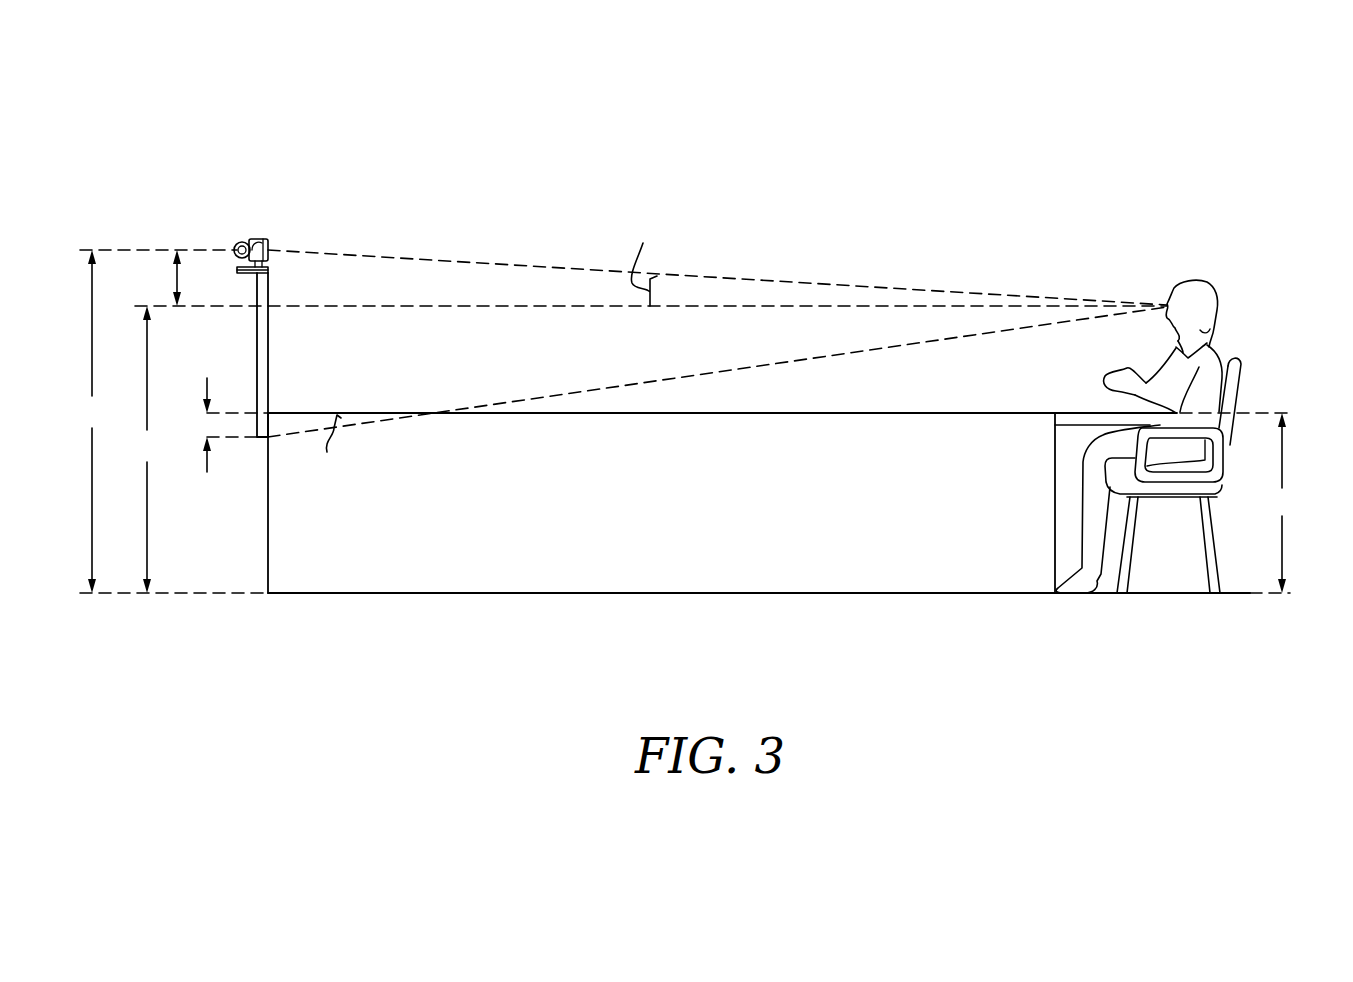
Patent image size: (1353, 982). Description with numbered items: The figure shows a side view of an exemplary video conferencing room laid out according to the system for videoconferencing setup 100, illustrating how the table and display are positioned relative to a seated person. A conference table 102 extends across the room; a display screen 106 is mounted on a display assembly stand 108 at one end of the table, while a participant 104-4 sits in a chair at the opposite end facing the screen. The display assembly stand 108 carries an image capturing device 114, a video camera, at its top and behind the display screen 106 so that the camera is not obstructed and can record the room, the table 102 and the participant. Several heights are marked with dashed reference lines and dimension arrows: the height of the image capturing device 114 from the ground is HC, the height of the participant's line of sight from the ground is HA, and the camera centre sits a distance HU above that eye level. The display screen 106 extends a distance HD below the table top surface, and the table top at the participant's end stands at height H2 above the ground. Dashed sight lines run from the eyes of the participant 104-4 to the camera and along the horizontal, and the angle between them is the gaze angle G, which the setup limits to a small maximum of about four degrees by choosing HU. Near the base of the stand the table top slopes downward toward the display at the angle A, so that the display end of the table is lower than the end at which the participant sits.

The system for videoconferencing setup 100 is at (1226, 146).
The table 102 is at (698, 413).
The participant 104-4 is at (1197, 280).
The display screen 106 is at (248, 335).
The display assembly stand 108 is at (266, 290).
The image capturing device 114 is at (253, 234).
The gaze angle G is at (644, 260).
The angle A is at (329, 446).
The height of the image capturing device from the ground HC is at (93, 421).
The height of line of sight of the participant from the ground HA is at (145, 449).
The camera center height from HA HU is at (194, 278).
The height of display screen under the table top surface HD is at (190, 425).
The height of the table at the second end from the ground H2 is at (1282, 503).